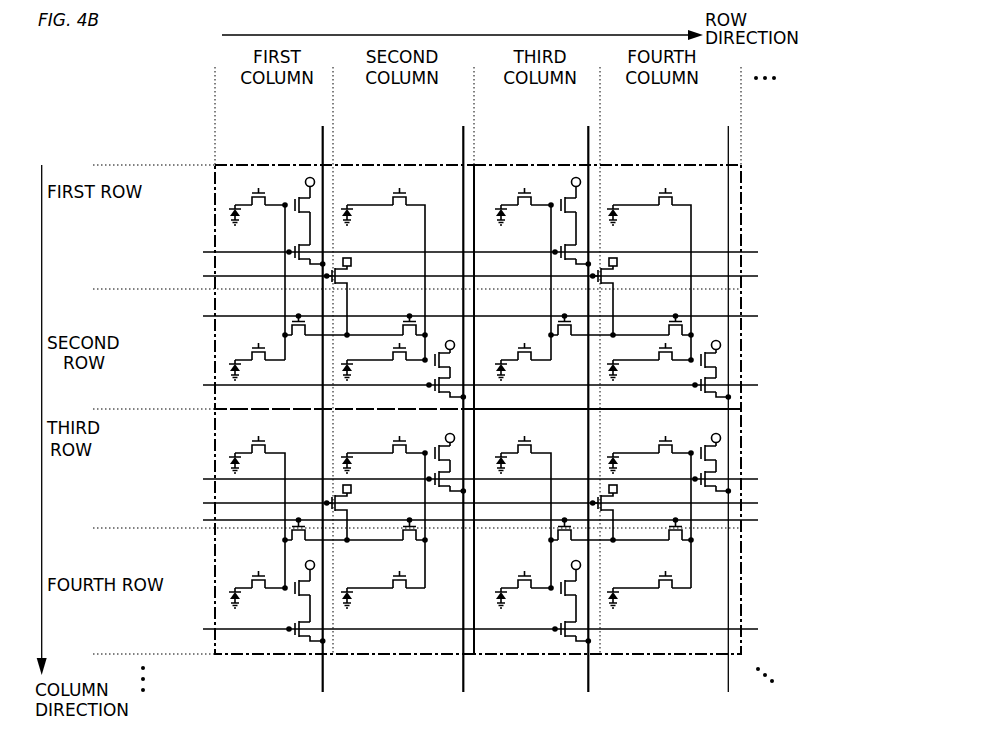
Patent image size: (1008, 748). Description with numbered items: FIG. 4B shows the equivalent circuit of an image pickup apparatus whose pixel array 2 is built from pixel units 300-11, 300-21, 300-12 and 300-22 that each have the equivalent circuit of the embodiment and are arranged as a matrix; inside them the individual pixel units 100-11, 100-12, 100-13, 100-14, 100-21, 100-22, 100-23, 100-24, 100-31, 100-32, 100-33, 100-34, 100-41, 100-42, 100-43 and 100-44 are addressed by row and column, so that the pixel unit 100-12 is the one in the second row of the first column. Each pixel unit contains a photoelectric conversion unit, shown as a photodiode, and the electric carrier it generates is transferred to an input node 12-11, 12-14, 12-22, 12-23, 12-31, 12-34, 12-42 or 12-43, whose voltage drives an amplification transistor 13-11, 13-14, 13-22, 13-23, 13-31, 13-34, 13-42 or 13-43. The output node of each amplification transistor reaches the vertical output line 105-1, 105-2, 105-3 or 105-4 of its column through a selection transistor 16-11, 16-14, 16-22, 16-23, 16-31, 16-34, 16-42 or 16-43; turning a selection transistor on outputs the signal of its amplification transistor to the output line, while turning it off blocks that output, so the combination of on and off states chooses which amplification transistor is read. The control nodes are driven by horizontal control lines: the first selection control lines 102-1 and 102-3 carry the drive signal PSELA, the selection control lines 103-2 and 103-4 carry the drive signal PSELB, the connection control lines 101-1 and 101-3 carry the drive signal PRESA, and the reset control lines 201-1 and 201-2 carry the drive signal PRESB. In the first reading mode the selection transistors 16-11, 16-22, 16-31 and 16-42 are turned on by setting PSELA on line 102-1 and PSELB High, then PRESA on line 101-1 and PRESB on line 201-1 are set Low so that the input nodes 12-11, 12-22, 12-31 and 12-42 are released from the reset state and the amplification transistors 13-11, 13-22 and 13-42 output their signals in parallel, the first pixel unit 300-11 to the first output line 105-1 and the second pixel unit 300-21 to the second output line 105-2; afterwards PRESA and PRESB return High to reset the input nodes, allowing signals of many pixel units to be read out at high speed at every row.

The pixel array 2 is at (146, 72).
The pixel unit 100-11 is at (271, 223).
The pixel unit 100-12 is at (243, 346).
The pixel unit 100-13 is at (212, 437).
The pixel unit 100-14 is at (224, 597).
The pixel unit 100-21 is at (374, 241).
The pixel unit 100-22 is at (349, 360).
The pixel unit 100-23 is at (349, 500).
The pixel unit 100-24 is at (397, 655).
The pixel unit 100-31 is at (535, 223).
The pixel unit 100-32 is at (585, 336).
The pixel unit 100-33 is at (603, 442).
The pixel unit 100-34 is at (539, 633).
The pixel unit 100-41 is at (696, 261).
The pixel unit 100-42 is at (705, 360).
The pixel unit 100-43 is at (696, 497).
The pixel unit 100-44 is at (743, 575).
The first output line 105-1 is at (301, 398).
The second output line 105-2 is at (444, 398).
The output line 105-3 is at (571, 398).
The output line 105-4 is at (707, 398).
The first pixel unit 300-11 is at (300, 163).
The second pixel unit 300-21 is at (566, 163).
The pixel unit 300-12 is at (262, 654).
The pixel unit 300-22 is at (640, 655).
The input node 12-11 is at (283, 348).
The input node 12-14 is at (283, 578).
The input node 12-22 is at (423, 236).
The input node 12-23 is at (433, 432).
The input node 12-31 is at (549, 348).
The input node 12-34 is at (549, 578).
The input node 12-42 is at (689, 236).
The input node 12-43 is at (703, 432).
The amplification transistor 13-11 is at (296, 222).
The amplification transistor 13-14 is at (300, 600).
The amplification transistor 13-22 is at (433, 370).
The amplification transistor 13-23 is at (433, 462).
The amplification transistor 13-31 is at (562, 222).
The amplification transistor 13-34 is at (566, 600).
The amplification transistor 13-42 is at (699, 370).
The amplification transistor 13-43 is at (699, 462).
The selection transistor 16-11 is at (298, 262).
The selection transistor 16-14 is at (300, 640).
The selection transistor 16-22 is at (442, 393).
The selection transistor 16-23 is at (442, 487).
The selection transistor 16-31 is at (564, 262).
The selection transistor 16-34 is at (566, 640).
The selection transistor 16-42 is at (708, 393).
The selection transistor 16-43 is at (708, 487).
The first selection control line 102-1 is at (415, 241).
The first selection control line 102-3 is at (415, 480).
The third selection control line 103-2 is at (415, 390).
The selection control line 103-4 is at (415, 628).
The connection control line 101-1 is at (415, 313).
The connection control line 101-3 is at (415, 518).
The reset control line 201-1 is at (415, 275).
The reset control line 201-2 is at (415, 500).